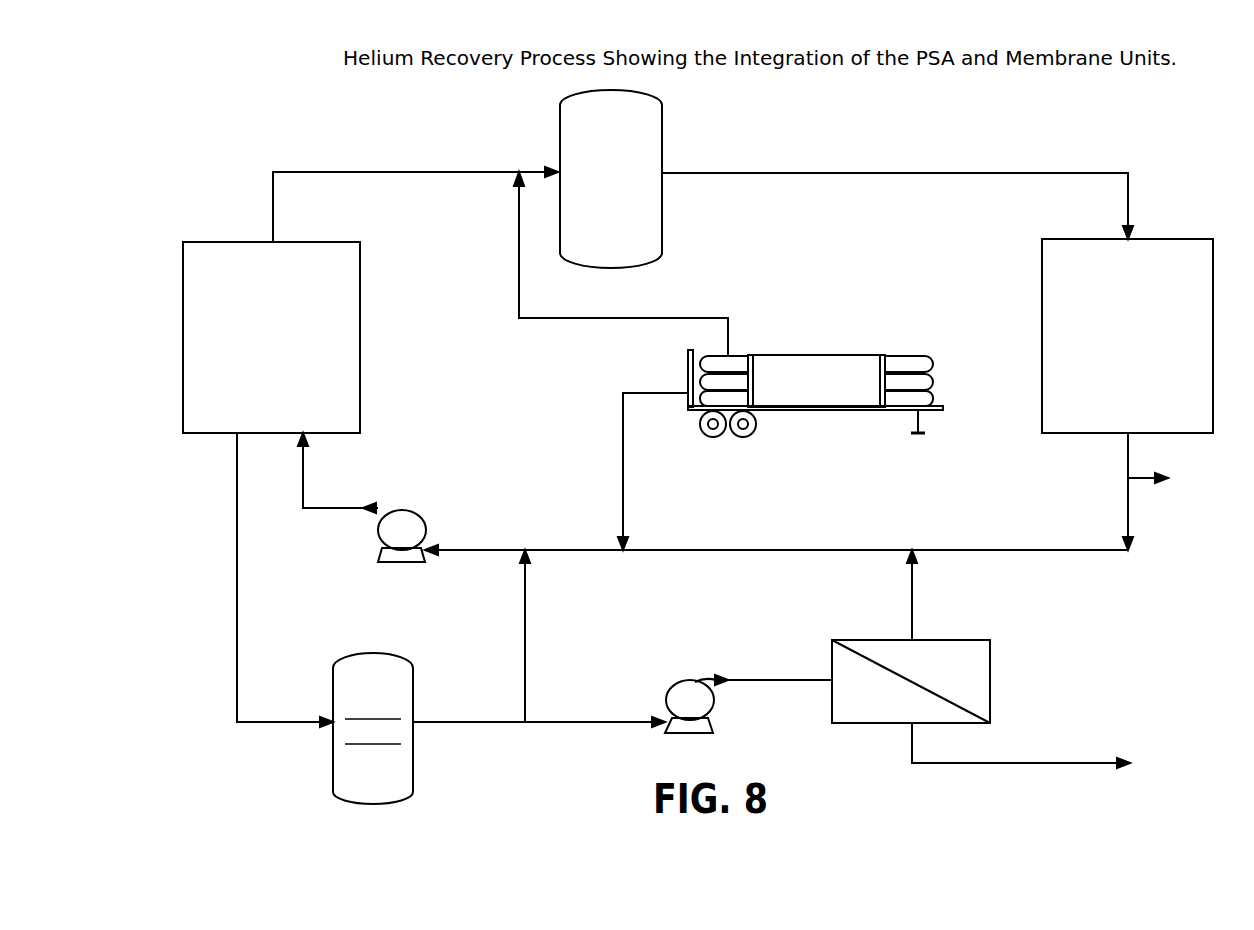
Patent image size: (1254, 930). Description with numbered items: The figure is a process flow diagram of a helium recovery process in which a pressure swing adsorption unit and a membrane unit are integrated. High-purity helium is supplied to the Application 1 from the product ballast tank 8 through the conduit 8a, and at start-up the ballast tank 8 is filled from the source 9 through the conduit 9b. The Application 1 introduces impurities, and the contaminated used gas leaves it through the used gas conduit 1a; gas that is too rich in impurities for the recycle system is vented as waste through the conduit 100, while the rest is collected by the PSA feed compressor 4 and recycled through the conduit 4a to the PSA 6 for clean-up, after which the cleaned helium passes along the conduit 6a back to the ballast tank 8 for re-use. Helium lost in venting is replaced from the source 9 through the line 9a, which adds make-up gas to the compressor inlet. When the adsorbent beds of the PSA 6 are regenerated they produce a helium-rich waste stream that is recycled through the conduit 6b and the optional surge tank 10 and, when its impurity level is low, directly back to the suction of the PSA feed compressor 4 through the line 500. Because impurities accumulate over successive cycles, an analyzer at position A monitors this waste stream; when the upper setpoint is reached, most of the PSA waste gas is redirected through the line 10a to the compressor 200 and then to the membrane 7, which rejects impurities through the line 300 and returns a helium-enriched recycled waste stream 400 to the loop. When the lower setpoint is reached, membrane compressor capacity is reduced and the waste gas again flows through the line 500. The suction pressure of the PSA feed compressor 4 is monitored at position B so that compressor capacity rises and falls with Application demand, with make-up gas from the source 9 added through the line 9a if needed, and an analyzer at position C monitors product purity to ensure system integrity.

The Application 1 is at (1121, 353).
The used gas conduit 1a is at (1128, 495).
The waste vent conduit 100 is at (1132, 475).
The PSA feed compressor 4 is at (407, 525).
The conduit 4a is at (303, 455).
The PSA 6 is at (263, 351).
The PSA product conduit 6a is at (328, 172).
The conduit 6b is at (236, 527).
The membrane 7 is at (950, 679).
The product ballast tank 8 is at (600, 186).
The conduit 8a is at (890, 173).
The source 9 is at (830, 365).
The conduit 9a is at (623, 447).
The conduit 9b is at (582, 318).
The surge tank 10 is at (360, 781).
The line 10a is at (491, 724).
The compressor 200 is at (716, 708).
The line 300 is at (975, 766).
The recycled waste stream 400 is at (912, 575).
The line 500 is at (525, 600).
The analyzer position A is at (455, 735).
The suction pressure monitoring position B is at (478, 538).
The product purity analyzer position C is at (263, 213).